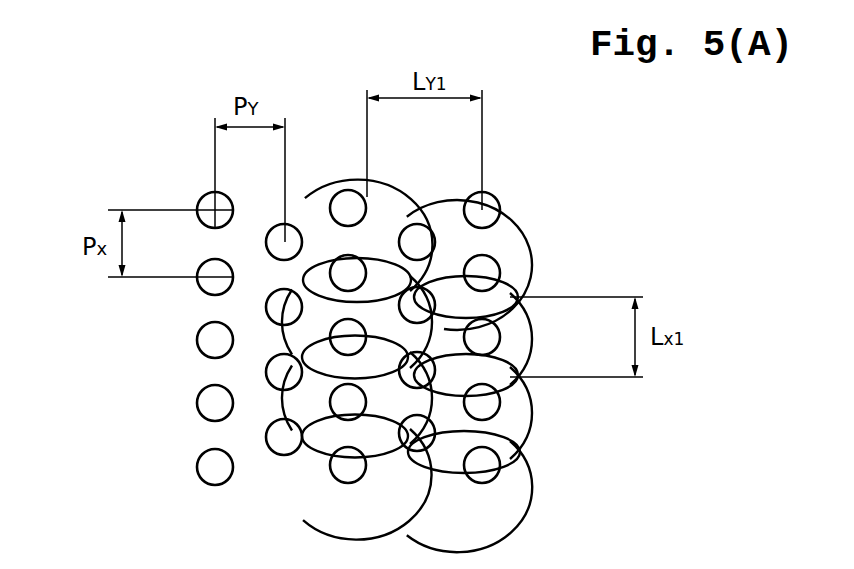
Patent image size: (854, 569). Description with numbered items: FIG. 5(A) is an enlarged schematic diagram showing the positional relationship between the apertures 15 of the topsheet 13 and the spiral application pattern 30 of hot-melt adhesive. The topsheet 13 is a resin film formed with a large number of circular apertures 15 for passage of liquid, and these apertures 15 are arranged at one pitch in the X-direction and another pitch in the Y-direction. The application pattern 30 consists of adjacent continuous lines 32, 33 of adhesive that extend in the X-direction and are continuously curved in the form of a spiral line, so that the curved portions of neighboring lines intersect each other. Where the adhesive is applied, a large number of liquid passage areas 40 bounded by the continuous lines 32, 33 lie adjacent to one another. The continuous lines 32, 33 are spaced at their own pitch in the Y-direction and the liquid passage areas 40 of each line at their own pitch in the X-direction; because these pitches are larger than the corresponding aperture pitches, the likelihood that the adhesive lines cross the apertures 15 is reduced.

The topsheet 13 is at (240, 428).
The apertures 15 is at (207, 340).
The application pattern 30 is at (568, 483).
The continuous line 32 is at (345, 178).
The continuous line 33 is at (517, 213).
The liquid passage areas 40 is at (452, 294).